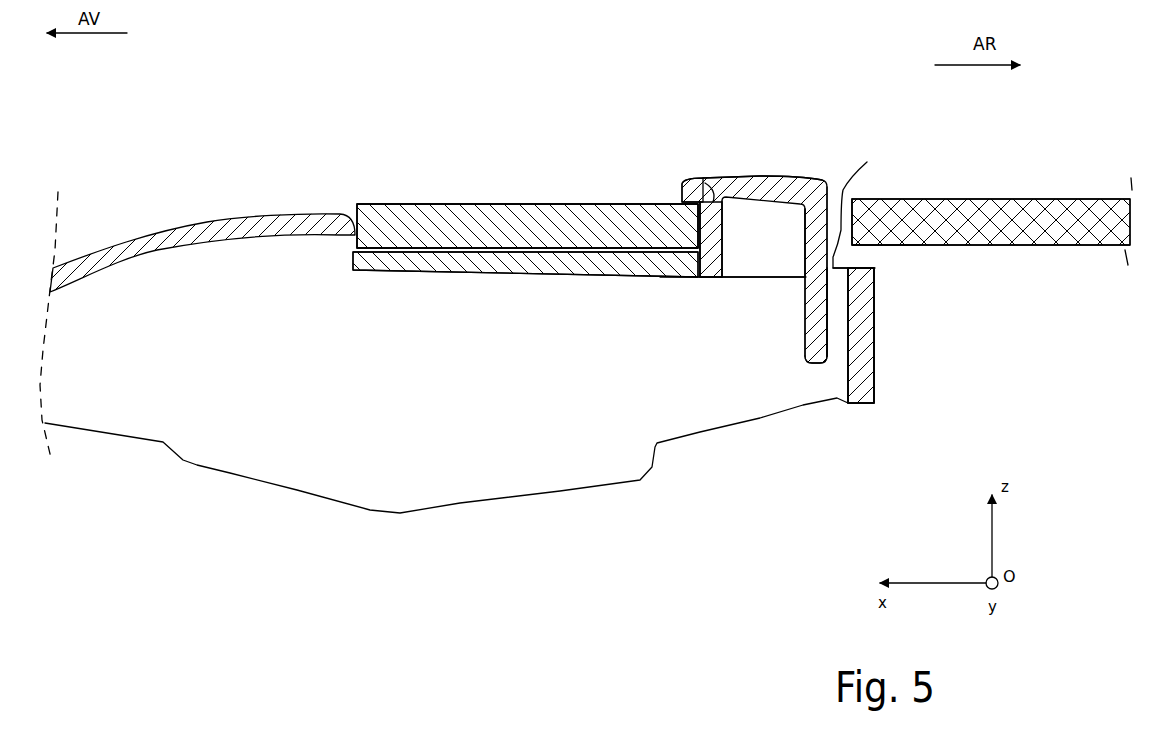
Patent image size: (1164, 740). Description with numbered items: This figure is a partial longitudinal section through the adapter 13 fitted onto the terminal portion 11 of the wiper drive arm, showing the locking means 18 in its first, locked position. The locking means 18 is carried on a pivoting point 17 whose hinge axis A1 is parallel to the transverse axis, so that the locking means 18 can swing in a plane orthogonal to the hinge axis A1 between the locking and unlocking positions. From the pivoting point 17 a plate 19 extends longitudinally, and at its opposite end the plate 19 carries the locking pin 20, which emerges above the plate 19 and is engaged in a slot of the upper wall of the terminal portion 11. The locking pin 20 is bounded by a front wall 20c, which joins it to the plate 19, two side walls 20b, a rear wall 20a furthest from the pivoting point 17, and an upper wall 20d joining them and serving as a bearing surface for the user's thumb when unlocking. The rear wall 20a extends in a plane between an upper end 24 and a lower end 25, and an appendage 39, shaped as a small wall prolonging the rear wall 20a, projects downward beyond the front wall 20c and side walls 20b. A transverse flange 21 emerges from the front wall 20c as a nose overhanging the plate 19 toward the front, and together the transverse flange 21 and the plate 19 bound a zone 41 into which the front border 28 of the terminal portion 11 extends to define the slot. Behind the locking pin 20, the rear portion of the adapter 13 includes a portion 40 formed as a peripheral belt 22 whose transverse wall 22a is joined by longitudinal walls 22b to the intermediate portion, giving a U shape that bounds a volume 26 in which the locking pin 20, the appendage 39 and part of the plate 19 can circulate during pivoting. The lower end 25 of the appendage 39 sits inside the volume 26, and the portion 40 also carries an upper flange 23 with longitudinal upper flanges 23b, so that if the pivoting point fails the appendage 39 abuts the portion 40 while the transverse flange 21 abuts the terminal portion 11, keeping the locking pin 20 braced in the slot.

The adapter 13 is at (283, 163).
The terminal portion 11 is at (466, 204).
The pivoting point 17 is at (518, 246).
The hinge axis A1 is at (499, 266).
The plate 19 is at (613, 266).
The locking means 18 is at (604, 292).
The locking pin 20 is at (787, 157).
The rear wall 20a is at (867, 162).
The side walls 20b is at (763, 239).
The front wall 20c is at (698, 233).
The upper wall 20d is at (760, 177).
The transverse flange 21 is at (683, 185).
The front border 28 is at (709, 200).
The upper end 24 is at (828, 182).
The lower end 25 is at (815, 364).
The volume 26 is at (840, 394).
The appendage 39 is at (803, 304).
The zone 41 is at (677, 278).
The peripheral belt 22 is at (882, 358).
The portion 40 is at (861, 335).
The transverse wall 22a is at (874, 340).
The longitudinal walls 22b is at (799, 312).
The upper flange 23 is at (868, 252).
The longitudinal upper flanges 23b is at (860, 243).